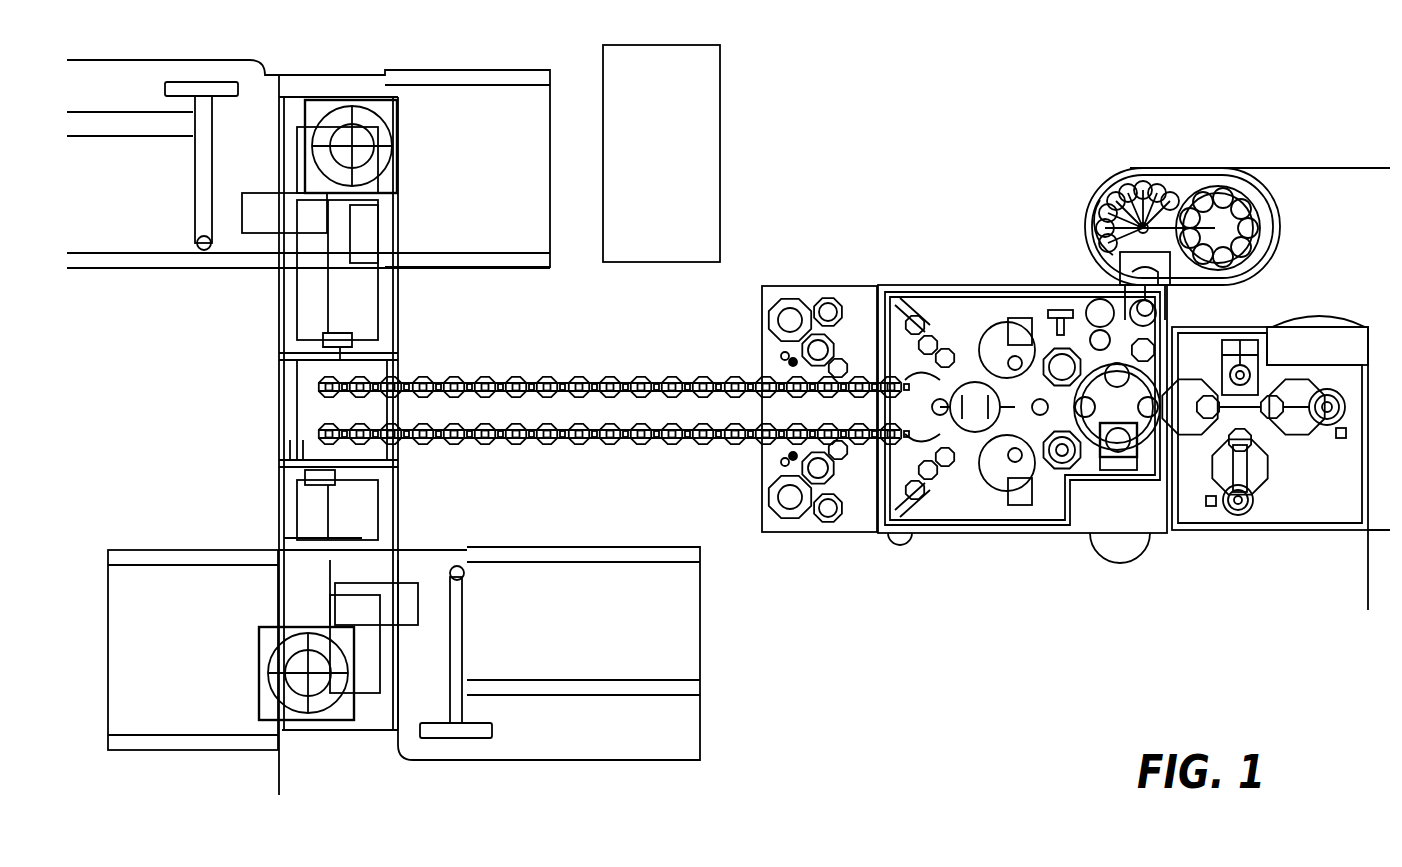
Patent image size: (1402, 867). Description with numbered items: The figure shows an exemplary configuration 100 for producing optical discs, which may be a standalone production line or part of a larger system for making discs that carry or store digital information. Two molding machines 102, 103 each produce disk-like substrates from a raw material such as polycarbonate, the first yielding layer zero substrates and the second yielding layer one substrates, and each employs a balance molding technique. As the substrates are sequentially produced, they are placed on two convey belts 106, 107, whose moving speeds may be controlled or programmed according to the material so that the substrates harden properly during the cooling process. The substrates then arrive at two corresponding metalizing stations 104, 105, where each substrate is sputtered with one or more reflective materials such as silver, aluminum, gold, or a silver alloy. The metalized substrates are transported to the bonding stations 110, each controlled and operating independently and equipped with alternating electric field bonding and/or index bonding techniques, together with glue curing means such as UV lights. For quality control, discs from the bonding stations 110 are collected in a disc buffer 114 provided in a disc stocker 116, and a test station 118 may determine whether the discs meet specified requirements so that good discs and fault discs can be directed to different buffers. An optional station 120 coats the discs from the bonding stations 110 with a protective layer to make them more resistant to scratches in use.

The configuration 100 is at (1260, 108).
The molding machine 102 is at (355, 92).
The molding machine 103 is at (330, 730).
The metalizing station 104 is at (800, 292).
The metalizing station 105 is at (790, 527).
The convey belt 106 is at (532, 377).
The convey belt 107 is at (532, 442).
The bonding station 110 is at (1168, 553).
The disc buffer 114 is at (1267, 195).
The disc stocker 116 is at (1187, 178).
The test station 118 is at (1090, 247).
The station 120 is at (1285, 507).